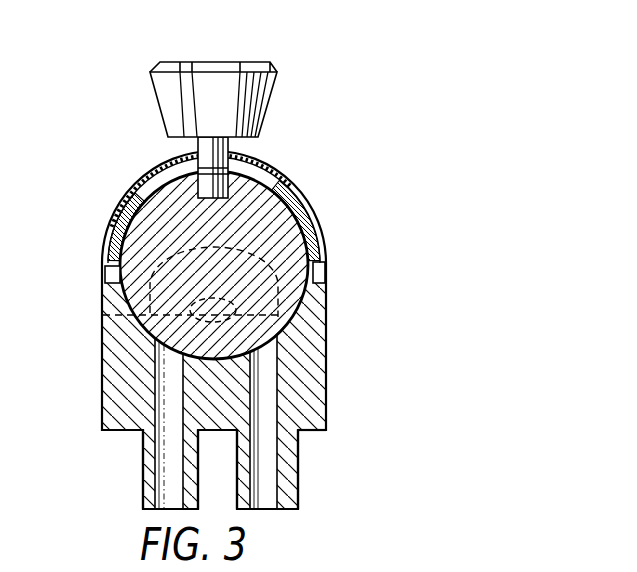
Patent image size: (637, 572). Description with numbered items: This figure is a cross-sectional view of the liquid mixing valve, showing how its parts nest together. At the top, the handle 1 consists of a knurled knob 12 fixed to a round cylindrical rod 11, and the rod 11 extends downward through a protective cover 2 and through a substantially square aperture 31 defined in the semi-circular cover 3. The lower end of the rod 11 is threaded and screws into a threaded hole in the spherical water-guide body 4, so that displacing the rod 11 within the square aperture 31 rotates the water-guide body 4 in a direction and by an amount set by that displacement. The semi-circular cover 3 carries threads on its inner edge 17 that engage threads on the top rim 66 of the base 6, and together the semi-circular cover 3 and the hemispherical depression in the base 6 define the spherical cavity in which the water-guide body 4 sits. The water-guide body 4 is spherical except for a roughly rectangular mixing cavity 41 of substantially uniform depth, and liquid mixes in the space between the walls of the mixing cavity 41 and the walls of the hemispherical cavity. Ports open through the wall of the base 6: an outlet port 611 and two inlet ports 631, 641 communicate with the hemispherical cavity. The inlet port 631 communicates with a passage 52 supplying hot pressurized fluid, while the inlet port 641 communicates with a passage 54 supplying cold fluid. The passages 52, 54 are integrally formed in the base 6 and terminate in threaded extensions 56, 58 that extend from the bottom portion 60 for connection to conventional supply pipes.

The handle 1 is at (263, 100).
The knurled knob 12 is at (228, 62).
The round cylindrical rod 11 is at (210, 145).
The protective cover 2 is at (262, 162).
The square aperture 31 is at (162, 178).
The water-guide body 4 is at (287, 182).
The semi-circular cover 3 is at (323, 237).
The top rim 66 is at (322, 277).
The inner edge 17 is at (108, 277).
The base 6 is at (315, 348).
The mixing cavity 41 is at (107, 292).
The outlet port 611 is at (103, 315).
The inlet port 631 is at (170, 357).
The inlet port 641 is at (262, 362).
The bottom portion 60 is at (315, 433).
The passage 52 is at (172, 460).
The passage 54 is at (265, 475).
The threaded extension 56 is at (142, 500).
The threaded extension 58 is at (297, 508).